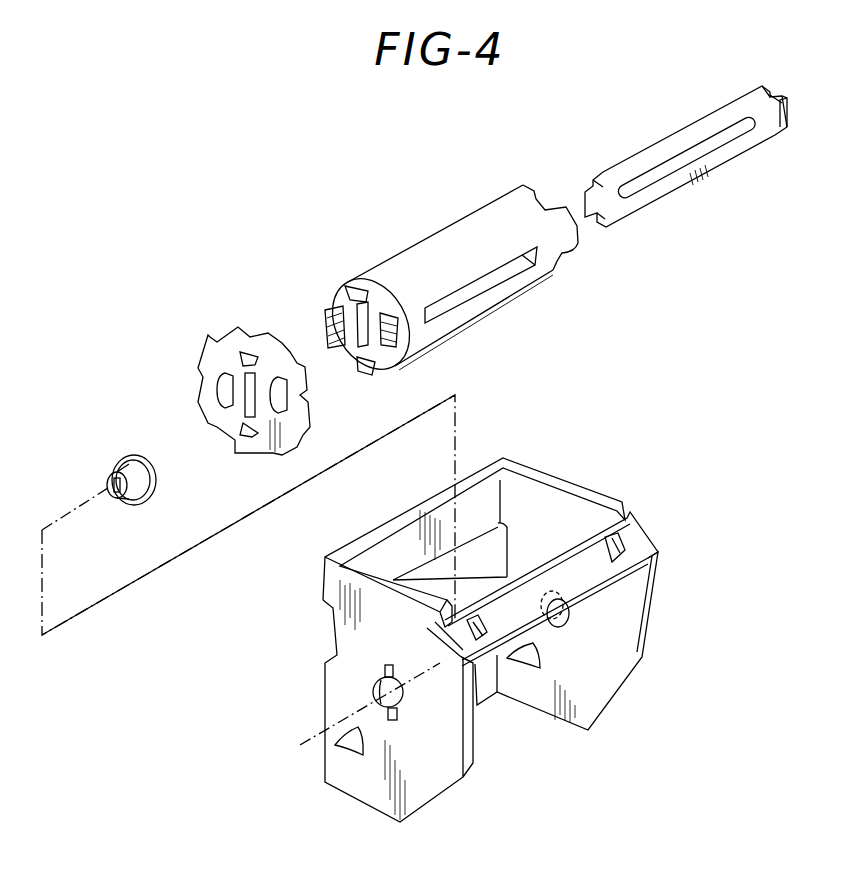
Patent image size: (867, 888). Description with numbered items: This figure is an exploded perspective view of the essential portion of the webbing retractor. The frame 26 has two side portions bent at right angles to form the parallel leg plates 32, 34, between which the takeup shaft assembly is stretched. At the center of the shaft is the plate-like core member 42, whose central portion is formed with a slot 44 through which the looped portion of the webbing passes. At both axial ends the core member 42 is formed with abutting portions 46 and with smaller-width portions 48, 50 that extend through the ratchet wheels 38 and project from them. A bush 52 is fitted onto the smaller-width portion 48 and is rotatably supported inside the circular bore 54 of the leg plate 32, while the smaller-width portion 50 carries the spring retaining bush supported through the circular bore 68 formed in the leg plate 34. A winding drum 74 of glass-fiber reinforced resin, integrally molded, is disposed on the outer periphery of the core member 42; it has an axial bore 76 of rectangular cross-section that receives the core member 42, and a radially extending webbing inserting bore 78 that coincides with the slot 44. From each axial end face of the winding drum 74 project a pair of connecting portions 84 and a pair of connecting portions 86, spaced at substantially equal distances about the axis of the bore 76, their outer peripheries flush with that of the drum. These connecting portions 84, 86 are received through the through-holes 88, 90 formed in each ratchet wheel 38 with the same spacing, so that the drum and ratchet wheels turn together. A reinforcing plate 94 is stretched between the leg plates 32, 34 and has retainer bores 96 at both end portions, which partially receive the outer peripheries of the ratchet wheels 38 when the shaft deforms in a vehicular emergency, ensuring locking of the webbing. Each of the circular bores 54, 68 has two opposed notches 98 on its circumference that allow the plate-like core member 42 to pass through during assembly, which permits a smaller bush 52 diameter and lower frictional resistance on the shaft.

The frame 26 is at (369, 552).
The leg plate 32 is at (404, 711).
The leg plate 34 is at (572, 641).
The ratchet wheel 38 is at (251, 389).
The plate-like core member 42 is at (684, 182).
The slot 44 is at (695, 176).
The abutting portions 46 is at (598, 180).
The smaller-width portion 48 is at (598, 224).
The smaller-width portion 50 is at (780, 122).
The bush 52 is at (140, 481).
The circular bore 54 is at (411, 681).
The circular bore 68 is at (569, 620).
The winding drum 74 is at (429, 292).
The bore 76 is at (333, 306).
The webbing inserting bore 78 is at (497, 285).
The connecting portions 84 is at (325, 326).
The connecting portions 86 is at (356, 290).
The through-holes 88 is at (205, 392).
The through-holes 90 is at (250, 352).
The reinforcing plate 94 is at (551, 589).
The retainer bores 96 is at (605, 540).
The notches 98 is at (390, 665).